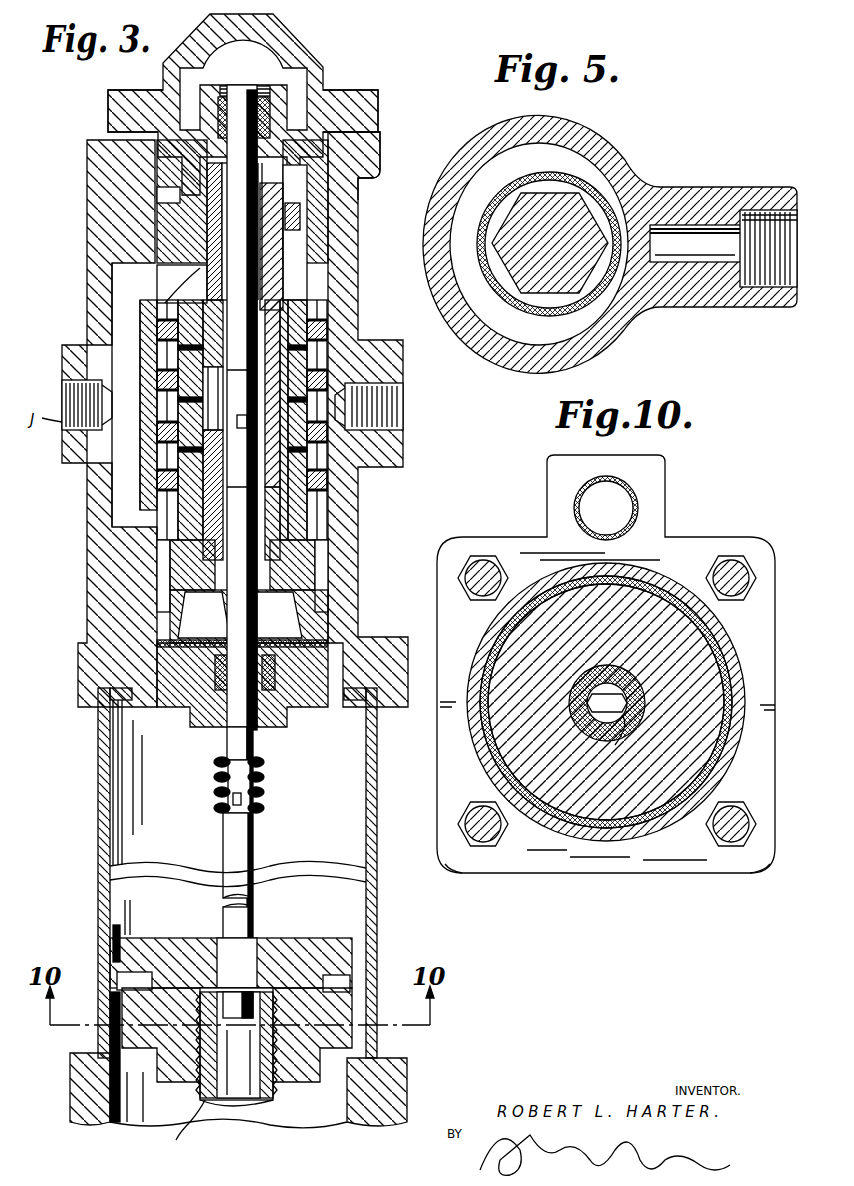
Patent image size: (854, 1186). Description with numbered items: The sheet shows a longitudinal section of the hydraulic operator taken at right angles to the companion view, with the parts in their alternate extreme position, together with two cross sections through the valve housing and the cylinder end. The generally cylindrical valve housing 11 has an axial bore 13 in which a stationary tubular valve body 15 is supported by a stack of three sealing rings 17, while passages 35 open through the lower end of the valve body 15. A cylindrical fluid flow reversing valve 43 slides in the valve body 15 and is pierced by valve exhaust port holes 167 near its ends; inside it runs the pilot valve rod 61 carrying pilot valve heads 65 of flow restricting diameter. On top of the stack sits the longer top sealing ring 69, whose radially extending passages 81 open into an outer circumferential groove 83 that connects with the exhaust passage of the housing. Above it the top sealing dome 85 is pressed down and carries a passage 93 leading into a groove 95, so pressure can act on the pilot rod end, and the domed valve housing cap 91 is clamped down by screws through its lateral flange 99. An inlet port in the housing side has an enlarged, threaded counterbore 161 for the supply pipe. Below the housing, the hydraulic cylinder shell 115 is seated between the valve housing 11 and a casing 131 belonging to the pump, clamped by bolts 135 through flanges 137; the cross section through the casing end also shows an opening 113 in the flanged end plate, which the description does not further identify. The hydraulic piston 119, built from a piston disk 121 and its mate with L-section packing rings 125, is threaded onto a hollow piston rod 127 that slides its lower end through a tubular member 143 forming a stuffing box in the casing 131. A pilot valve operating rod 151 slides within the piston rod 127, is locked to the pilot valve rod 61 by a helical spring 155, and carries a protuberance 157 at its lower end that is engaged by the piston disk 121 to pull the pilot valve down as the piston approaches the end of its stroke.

In FIG. 3, the valve housing 11 is at (90, 214).
In FIG. 3, the bore 13 is at (150, 525).
In FIG. 3, the valve body 15 is at (185, 296).
In FIG. 3, the sealing rings 17 is at (166, 383).
In FIG. 3, the passages 35 is at (178, 540).
In FIG. 3, the fluid flow reversing valve 43 is at (178, 318).
In FIG. 3, the pilot valve rod 61 is at (232, 746).
In FIG. 3, the heads 65 is at (300, 300).
In FIG. 3, the top sealing ring 69 is at (170, 248).
In FIG. 3, the radially extending passages 81 is at (305, 260).
In FIG. 3, the groove 83 is at (290, 245).
In FIG. 3, the top sealing dome 85 is at (273, 122).
In FIG. 3, the valve housing cap 91 is at (164, 78).
In FIG. 3, the passage 93 is at (160, 178).
In FIG. 3, the groove 95 is at (340, 203).
In FIG. 3, the lateral flange 99 is at (108, 115).
In FIG. 10, the opening 113 is at (636, 507).
In FIG. 3, the hydraulic cylinder shell 115 is at (100, 826).
In FIG. 10, the hydraulic cylinder shell 115 is at (740, 690).
In FIG. 3, the hydraulic piston 119 is at (231, 1039).
In FIG. 3, the piston disk 121 is at (115, 943).
In FIG. 10, the packing rings 125 is at (662, 840).
In FIG. 3, the piston rod 127 is at (172, 1124).
In FIG. 10, the piston rod 127 is at (615, 745).
In FIG. 3, the casing 131 is at (78, 1095).
In FIG. 5, the casing 131 is at (630, 330).
In FIG. 10, the bolts 135 is at (483, 560).
In FIG. 10, the flanges 137 is at (497, 877).
In FIG. 5, the tubular member 143 is at (605, 200).
In FIG. 3, the pilot valve operating rod 151 is at (230, 830).
In FIG. 3, the helical spring 155 is at (220, 770).
In FIG. 3, the protuberance 157 is at (234, 1015).
In FIG. 10, the protuberance 157 is at (600, 705).
In FIG. 3, the counterbore 161 is at (405, 425).
In FIG. 3, the valve exhaust port holes 167 is at (317, 290).